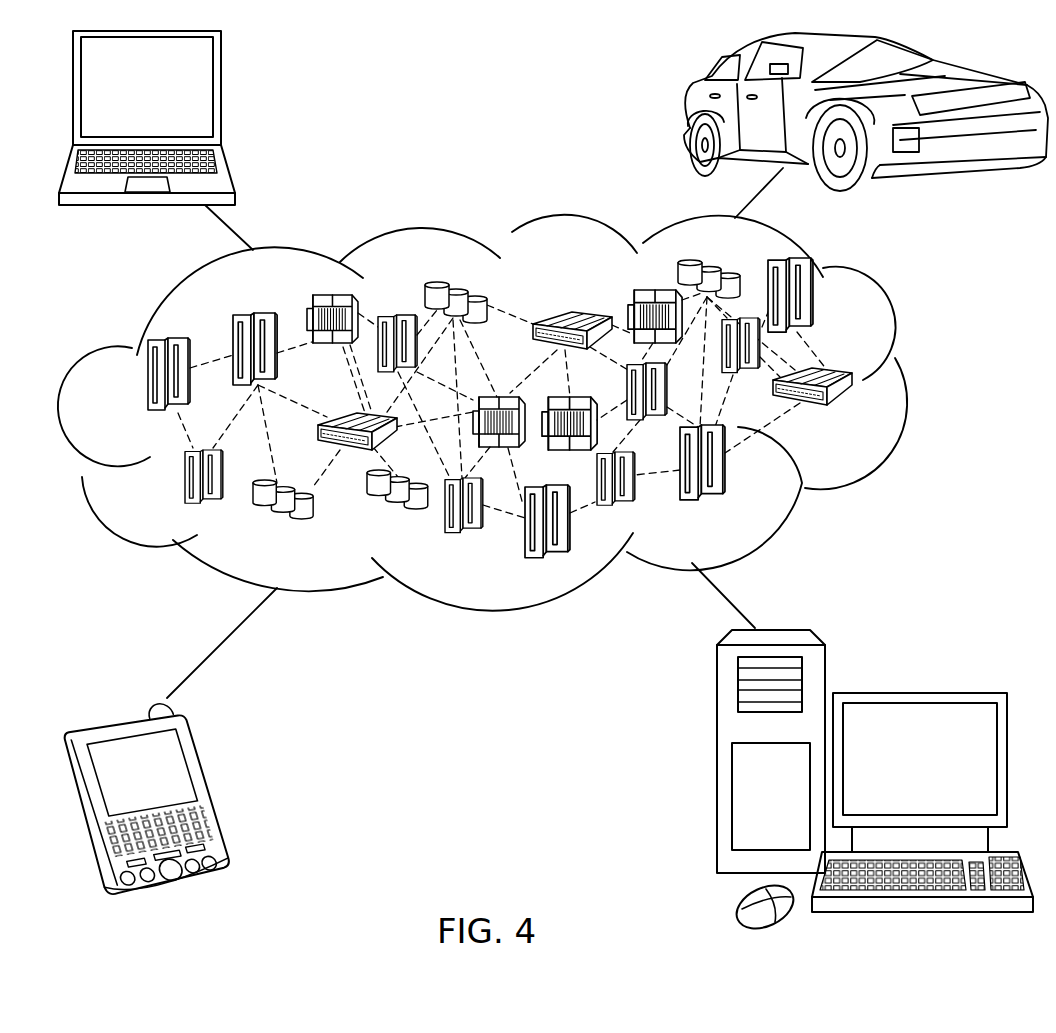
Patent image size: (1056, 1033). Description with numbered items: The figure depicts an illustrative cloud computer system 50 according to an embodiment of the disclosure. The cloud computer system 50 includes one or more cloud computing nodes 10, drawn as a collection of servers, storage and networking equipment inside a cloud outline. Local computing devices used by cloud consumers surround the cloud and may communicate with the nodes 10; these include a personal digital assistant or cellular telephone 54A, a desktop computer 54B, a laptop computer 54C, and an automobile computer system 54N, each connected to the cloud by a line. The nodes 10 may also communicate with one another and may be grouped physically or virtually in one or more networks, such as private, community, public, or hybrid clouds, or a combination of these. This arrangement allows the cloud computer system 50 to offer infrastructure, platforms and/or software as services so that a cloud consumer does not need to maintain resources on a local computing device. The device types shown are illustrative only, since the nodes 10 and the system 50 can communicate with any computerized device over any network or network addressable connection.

The cloud computing node 10 is at (868, 421).
The cloud computer system 50 is at (519, 413).
The personal digital assistant (PDA) or cellular telephone 54A is at (208, 792).
The desktop computer 54B is at (915, 693).
The laptop computer 54C is at (222, 95).
The automobile computer system 54N is at (688, 112).